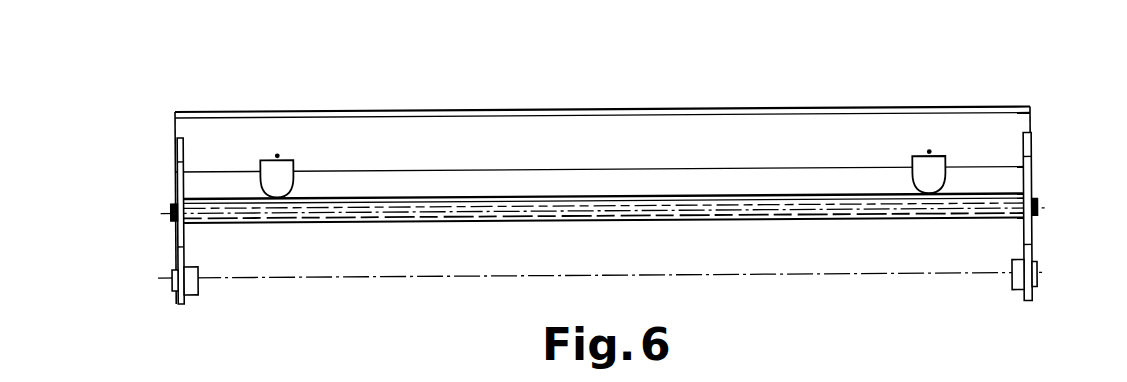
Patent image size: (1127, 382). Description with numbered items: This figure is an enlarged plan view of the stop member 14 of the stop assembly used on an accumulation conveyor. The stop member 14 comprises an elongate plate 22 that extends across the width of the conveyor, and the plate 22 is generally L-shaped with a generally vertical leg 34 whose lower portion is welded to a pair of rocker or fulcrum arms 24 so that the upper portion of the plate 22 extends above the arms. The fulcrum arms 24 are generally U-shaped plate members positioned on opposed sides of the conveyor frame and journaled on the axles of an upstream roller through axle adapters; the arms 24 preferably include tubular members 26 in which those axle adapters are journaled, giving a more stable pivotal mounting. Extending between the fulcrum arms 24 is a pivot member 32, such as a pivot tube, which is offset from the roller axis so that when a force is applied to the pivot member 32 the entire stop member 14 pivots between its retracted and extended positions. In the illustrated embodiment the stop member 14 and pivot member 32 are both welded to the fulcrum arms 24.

The stop member 14 is at (611, 186).
The elongate plate 22 is at (757, 110).
The fulcrum arms 24 is at (167, 291).
The tubular members 26 is at (189, 296).
The pivot member 32 is at (720, 219).
The generally vertical leg 34 is at (508, 130).